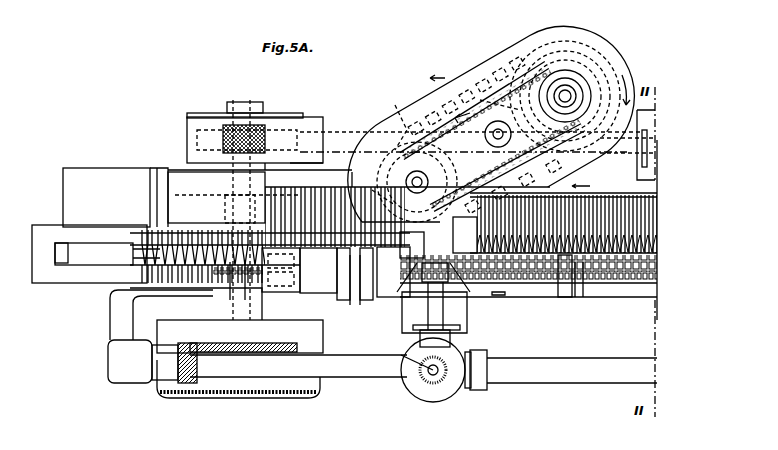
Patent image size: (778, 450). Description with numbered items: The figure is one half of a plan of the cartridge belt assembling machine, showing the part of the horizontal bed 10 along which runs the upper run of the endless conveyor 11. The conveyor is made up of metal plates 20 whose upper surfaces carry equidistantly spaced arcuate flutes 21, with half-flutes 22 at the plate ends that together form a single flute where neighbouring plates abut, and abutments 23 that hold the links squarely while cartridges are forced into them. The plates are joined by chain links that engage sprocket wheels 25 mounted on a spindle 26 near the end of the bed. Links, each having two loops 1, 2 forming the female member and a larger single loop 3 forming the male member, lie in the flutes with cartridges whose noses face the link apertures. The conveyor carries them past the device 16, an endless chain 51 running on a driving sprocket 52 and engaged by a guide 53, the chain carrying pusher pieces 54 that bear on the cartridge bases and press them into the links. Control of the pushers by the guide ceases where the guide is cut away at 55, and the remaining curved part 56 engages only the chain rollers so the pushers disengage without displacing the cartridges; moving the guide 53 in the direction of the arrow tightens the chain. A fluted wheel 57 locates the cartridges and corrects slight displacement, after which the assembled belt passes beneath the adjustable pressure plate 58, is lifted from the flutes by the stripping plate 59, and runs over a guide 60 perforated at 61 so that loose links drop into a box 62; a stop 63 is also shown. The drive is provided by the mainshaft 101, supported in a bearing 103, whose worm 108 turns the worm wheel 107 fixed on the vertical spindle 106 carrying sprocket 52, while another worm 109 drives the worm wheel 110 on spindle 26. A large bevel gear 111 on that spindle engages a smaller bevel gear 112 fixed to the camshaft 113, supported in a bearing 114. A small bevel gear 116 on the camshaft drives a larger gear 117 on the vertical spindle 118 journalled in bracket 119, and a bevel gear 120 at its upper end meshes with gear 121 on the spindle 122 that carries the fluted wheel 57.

The loop 1 is at (140, 236).
The loop 2 is at (145, 265).
The single loop 3 is at (143, 258).
The horizontal bed 10 is at (537, 312).
The endless conveyor 11 is at (639, 295).
The device 16 is at (467, 70).
The plates 20 is at (618, 193).
The arcuate flutes 21 is at (292, 186).
The half-flutes 22 is at (317, 186).
The abutments 23 is at (242, 273).
The sprocket wheels 25 is at (308, 279).
The spindle 26 is at (250, 307).
The endless chain 51 is at (422, 117).
The sprocket 52 is at (522, 110).
The guide 53 is at (391, 119).
The pusher pieces 54 is at (488, 194).
The cut-away part 55 is at (430, 182).
The remaining part of the guide 56 is at (369, 188).
The fluted wheel 57 is at (404, 258).
The pressure plate 58 is at (323, 293).
The stripping plate 59 is at (222, 282).
The guide 60 is at (97, 283).
The perforation 61 is at (76, 262).
The box 62 is at (115, 197).
The stop 63 is at (513, 292).
The mainshaft 101 is at (343, 140).
The bearing 103 is at (310, 120).
The vertical spindle 106 is at (566, 96).
The worm wheel 107 is at (512, 134).
The worm 108 is at (613, 149).
The worm 109 is at (265, 114).
The worm wheel 110 is at (210, 150).
The large bevel gear 111 is at (280, 352).
The bevel gear 112 is at (187, 387).
The camshaft 113 is at (575, 375).
The bearing 114 is at (108, 355).
The small bevel gear 116 is at (467, 388).
The bevel gear 117 is at (433, 403).
The vertical spindle 118 is at (423, 377).
The bracket 119 is at (460, 328).
The bevel gear 120 is at (407, 353).
The bevel gear 121 is at (445, 358).
The spindle 122 is at (430, 307).